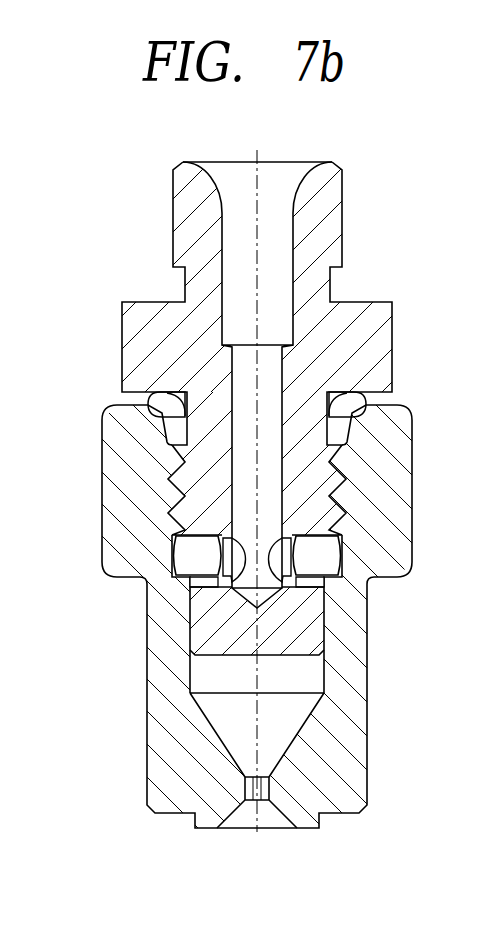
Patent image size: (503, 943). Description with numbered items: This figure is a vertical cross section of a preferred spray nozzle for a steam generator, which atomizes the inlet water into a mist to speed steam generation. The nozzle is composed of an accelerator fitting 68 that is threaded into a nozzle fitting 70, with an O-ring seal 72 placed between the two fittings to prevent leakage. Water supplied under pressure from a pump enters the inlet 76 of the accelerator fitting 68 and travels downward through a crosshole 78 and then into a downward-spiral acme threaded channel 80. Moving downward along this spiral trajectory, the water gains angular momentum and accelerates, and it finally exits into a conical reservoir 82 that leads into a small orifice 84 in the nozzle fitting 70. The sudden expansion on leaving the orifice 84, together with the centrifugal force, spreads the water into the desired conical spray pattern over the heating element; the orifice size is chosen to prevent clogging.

The accelerator fitting 68 is at (128, 298).
The nozzle fitting 70 is at (367, 712).
The O-ring seal 72 is at (140, 398).
The inlet 76 is at (258, 195).
The crosshole 78 is at (325, 550).
The downward-spiral acme threaded channel 80 is at (303, 620).
The conical reservoir 82 is at (217, 715).
The orifice 84 is at (238, 790).